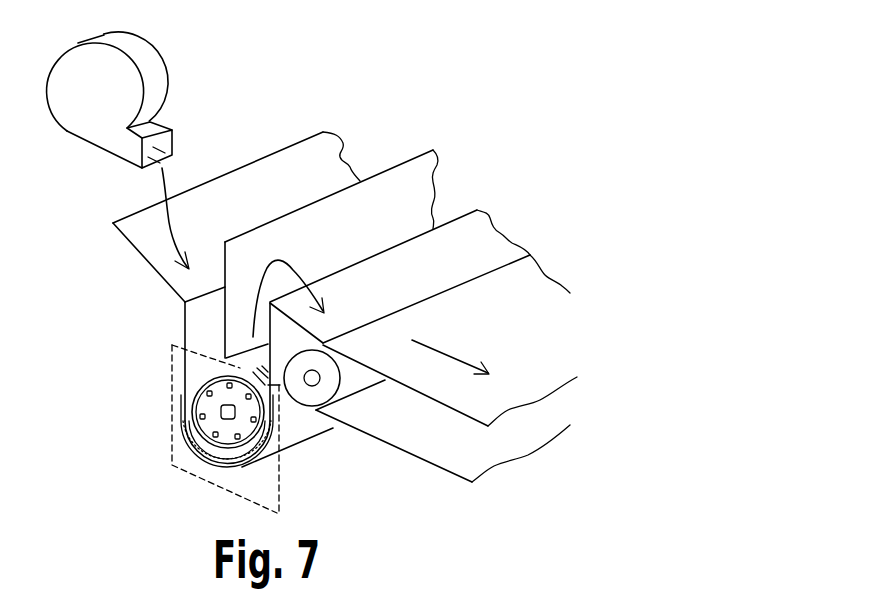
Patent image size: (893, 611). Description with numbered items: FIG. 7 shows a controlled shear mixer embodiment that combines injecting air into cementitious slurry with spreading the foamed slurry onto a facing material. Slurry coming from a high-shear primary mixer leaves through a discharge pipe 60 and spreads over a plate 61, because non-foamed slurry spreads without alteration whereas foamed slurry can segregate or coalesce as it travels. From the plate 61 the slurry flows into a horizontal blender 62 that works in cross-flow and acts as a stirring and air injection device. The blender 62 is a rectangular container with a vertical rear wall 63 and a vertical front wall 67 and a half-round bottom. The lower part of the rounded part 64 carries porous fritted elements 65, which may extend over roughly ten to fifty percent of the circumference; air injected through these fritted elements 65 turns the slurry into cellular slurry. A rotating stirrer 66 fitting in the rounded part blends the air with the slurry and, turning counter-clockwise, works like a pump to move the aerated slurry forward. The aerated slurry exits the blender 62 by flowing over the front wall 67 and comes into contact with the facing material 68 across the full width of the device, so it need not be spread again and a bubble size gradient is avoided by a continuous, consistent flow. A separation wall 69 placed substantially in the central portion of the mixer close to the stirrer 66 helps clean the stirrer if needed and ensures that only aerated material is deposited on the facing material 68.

The discharge pipe 60 is at (165, 145).
The plate 61 is at (155, 268).
The horizontal blender 62 is at (172, 445).
The rear wall 63 is at (176, 347).
The lower part of the rounded part 64 is at (218, 463).
The porous fritted elements 65 is at (182, 413).
The rotating stirrer 66 is at (252, 448).
The front wall 67 is at (493, 243).
The facing material 68 is at (440, 385).
The separation wall 69 is at (410, 190).